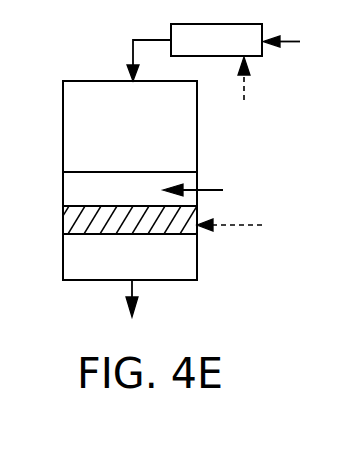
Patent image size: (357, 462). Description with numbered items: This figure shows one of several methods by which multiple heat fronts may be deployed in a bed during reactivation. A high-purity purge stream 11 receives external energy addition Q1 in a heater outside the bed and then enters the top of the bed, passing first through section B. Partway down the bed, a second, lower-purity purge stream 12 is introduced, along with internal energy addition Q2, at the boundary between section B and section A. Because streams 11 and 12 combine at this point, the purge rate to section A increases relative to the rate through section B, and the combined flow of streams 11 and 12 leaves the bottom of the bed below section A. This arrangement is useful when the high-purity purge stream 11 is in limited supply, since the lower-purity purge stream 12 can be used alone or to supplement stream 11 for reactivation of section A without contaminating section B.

The purge stream 11 is at (202, 178).
The purge stream 12 is at (211, 246).
The section A of the bed A is at (130, 257).
The section B of the bed B is at (130, 126).
The external energy addition Q1 is at (258, 86).
The internal energy addition Q2 is at (235, 242).